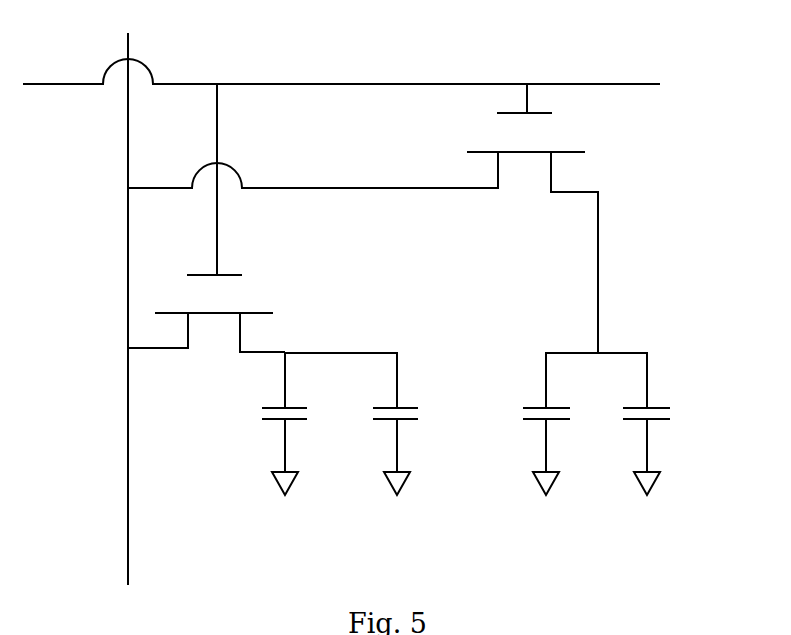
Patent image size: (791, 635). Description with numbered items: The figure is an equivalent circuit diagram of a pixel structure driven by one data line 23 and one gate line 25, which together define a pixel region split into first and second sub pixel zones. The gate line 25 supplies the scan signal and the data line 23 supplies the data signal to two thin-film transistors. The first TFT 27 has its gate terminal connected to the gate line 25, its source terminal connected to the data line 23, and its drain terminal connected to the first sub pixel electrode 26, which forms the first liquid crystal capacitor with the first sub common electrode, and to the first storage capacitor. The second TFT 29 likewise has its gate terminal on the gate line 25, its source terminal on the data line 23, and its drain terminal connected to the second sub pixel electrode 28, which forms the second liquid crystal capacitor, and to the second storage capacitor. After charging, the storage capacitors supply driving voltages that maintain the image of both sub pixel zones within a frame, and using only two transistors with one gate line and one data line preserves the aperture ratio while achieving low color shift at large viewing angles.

The data line 23 is at (128, 137).
The gate line 25 is at (377, 84).
The first sub pixel electrode 26 is at (280, 407).
The first TFT 27 is at (217, 292).
The second sub pixel electrode 28 is at (542, 405).
The second TFT 29 is at (537, 137).